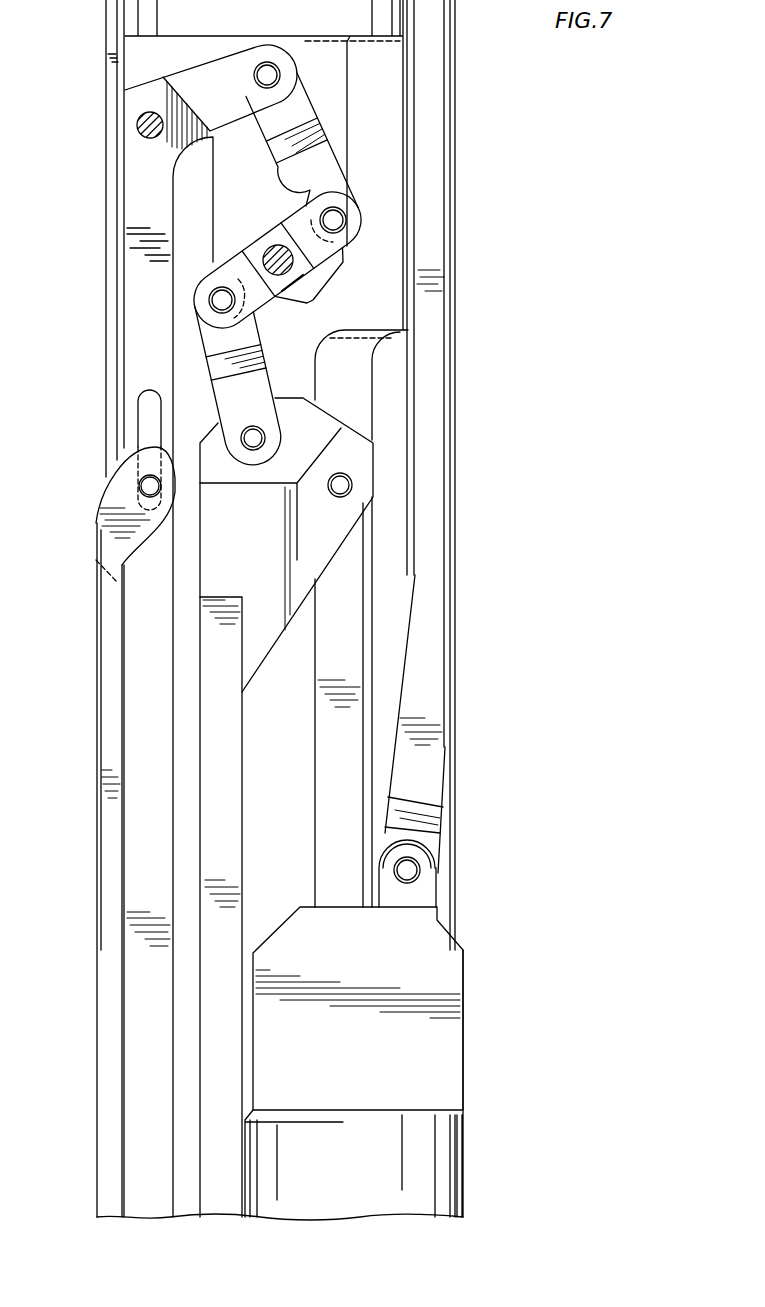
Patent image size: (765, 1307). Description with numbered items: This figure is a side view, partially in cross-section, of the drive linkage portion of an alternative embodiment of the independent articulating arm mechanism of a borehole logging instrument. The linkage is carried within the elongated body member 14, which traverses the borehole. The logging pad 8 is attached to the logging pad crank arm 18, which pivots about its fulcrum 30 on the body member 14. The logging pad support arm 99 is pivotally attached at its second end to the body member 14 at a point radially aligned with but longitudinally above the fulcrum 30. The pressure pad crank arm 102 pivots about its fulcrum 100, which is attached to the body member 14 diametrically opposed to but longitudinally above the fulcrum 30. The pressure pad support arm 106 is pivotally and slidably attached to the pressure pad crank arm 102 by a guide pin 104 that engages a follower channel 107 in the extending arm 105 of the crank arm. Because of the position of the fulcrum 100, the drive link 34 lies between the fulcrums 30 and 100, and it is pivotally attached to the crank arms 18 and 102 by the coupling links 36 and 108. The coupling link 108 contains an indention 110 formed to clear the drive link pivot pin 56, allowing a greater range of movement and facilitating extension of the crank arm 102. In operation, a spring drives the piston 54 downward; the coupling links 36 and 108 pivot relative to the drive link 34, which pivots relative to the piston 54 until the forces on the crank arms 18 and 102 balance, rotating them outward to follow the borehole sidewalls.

The body member 14 is at (106, 42).
The fulcrum 100 is at (137, 125).
The coupling link 108 is at (300, 110).
The indention 110 is at (308, 182).
The piston 54 is at (211, 215).
The pressure pad crank arm 102 is at (124, 278).
The drive link 34 is at (345, 262).
The drive link pivot pin 56 is at (293, 268).
The coupling link 36 is at (267, 355).
The follower channel 107 is at (141, 423).
The guide pin 104 is at (141, 487).
The fulcrum 30 is at (353, 483).
The logging pad support arm 99 is at (456, 592).
The extending arm 105 is at (143, 672).
The pressure pad support arm 106 is at (97, 764).
The logging pad crank arm 18 is at (243, 795).
The logging pad 8 is at (463, 1028).